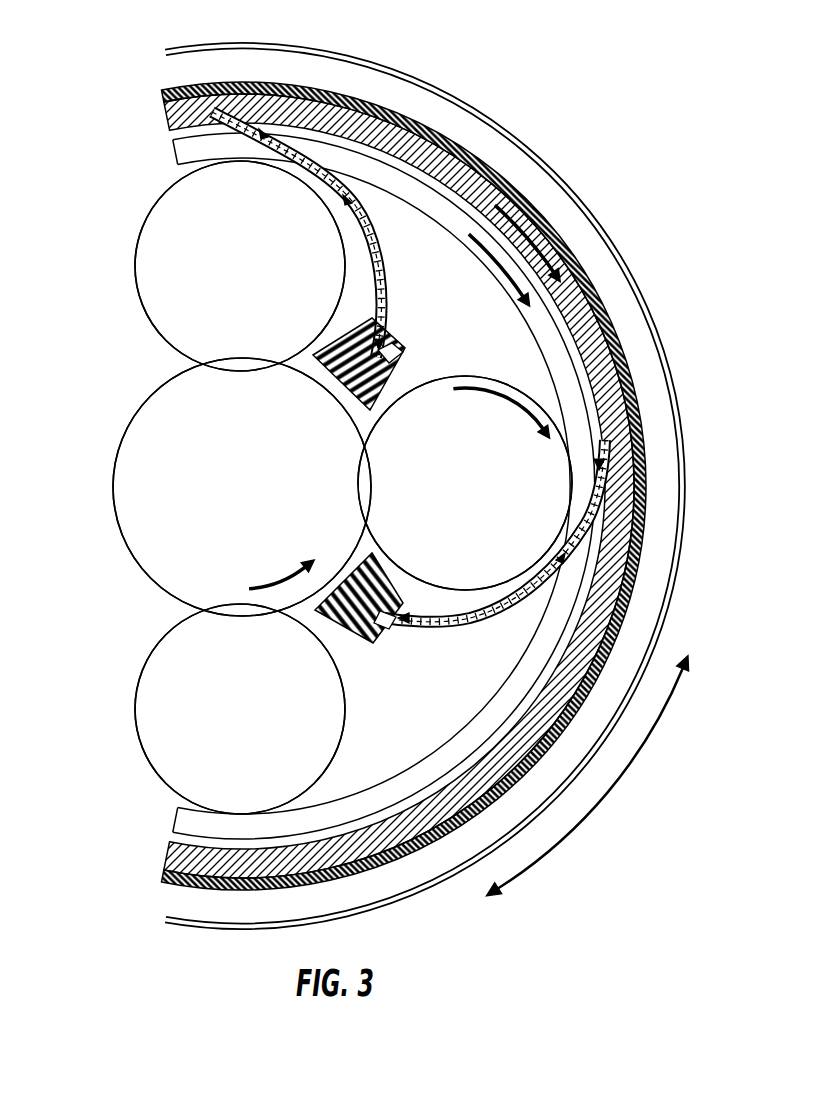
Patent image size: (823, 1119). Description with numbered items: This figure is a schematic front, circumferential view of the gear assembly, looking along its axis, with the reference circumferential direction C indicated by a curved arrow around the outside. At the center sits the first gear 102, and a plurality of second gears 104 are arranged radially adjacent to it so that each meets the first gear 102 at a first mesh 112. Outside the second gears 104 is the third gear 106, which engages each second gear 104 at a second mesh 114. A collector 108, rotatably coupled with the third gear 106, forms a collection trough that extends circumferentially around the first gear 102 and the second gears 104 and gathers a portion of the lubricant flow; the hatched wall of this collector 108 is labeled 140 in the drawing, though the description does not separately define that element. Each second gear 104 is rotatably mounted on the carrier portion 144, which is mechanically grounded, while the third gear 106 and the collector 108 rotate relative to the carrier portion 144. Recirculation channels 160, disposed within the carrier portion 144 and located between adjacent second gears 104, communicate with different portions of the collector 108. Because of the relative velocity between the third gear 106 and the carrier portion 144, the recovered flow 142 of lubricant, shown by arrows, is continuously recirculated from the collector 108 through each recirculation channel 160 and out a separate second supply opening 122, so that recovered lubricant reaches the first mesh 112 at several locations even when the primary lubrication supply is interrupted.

The first gear 102 is at (114, 485).
The second gear 104 is at (139, 239).
The third gear 106 is at (176, 815).
The collector 108 is at (415, 486).
The first mesh 112 is at (243, 358).
The second mesh 114 is at (237, 163).
The second supply opening 122 is at (393, 355).
The housing layer 140 is at (269, 100).
The recovered flow 142 is at (336, 178).
The carrier portion 144 is at (401, 361).
The recirculation channel 160 is at (382, 241).
The circumferential direction C is at (650, 760).